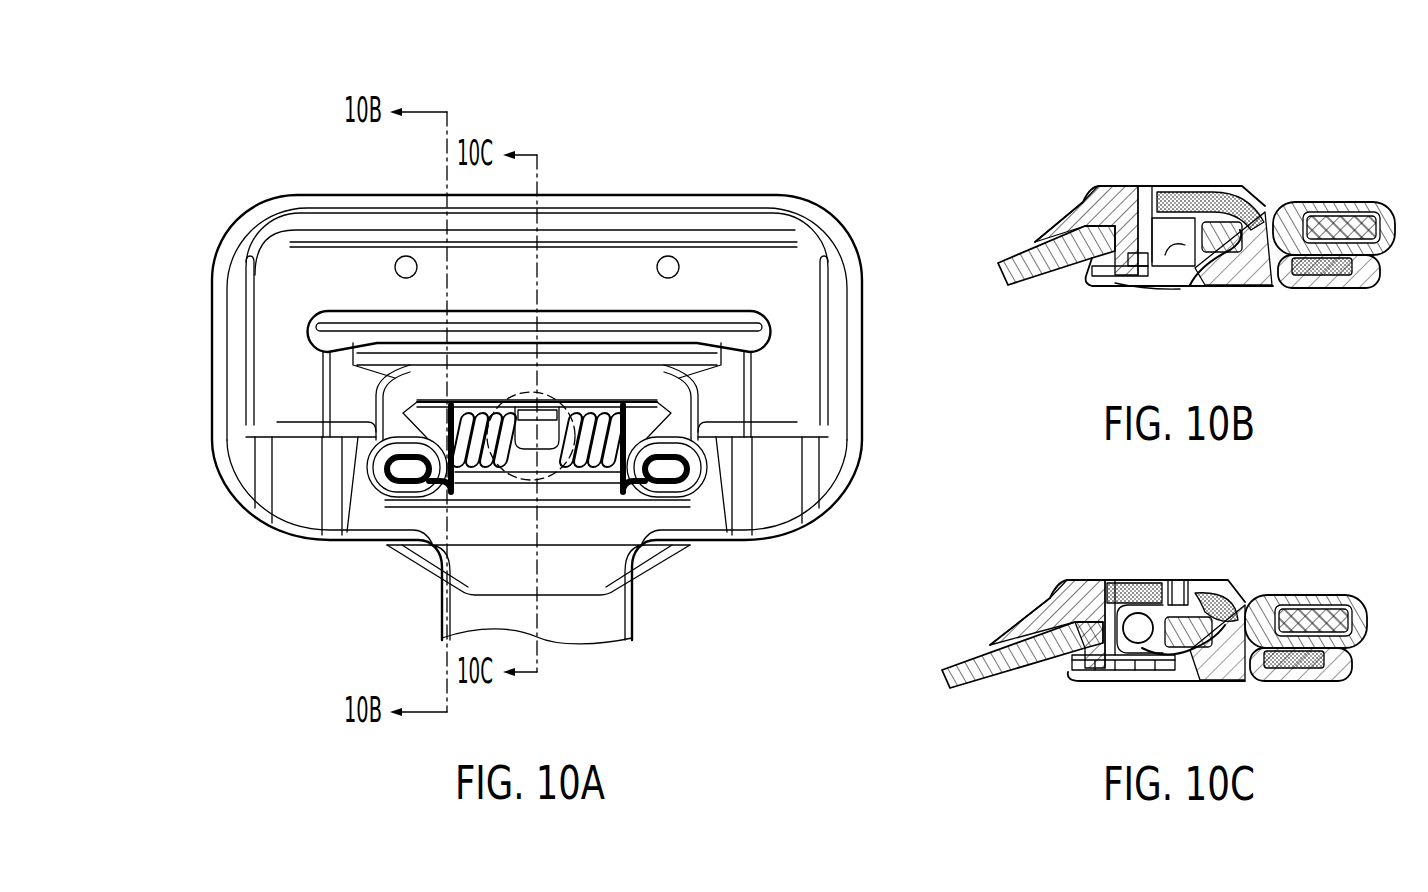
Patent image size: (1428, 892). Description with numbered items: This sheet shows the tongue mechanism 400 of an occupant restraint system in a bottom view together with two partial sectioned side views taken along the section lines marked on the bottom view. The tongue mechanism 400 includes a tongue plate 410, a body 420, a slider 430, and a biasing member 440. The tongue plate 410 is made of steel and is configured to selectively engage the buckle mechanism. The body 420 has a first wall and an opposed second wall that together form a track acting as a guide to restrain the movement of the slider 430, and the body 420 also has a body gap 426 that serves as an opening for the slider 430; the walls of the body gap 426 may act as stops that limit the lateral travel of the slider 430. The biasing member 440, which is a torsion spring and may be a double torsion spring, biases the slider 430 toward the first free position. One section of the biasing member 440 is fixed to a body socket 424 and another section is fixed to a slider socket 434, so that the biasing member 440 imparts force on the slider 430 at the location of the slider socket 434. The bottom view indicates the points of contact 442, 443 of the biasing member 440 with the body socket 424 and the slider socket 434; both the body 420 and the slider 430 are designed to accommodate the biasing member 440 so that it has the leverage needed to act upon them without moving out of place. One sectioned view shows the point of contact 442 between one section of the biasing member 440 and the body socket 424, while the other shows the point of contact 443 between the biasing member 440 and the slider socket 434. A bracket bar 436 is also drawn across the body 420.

In FIG. 10A, the tongue mechanism 400 is at (207, 143).
In FIG. 10A, the tongue plate 410 is at (608, 622).
In FIG. 10A, the body 420 is at (788, 494).
In FIG. 10B, the body 420 is at (1100, 212).
In FIG. 10C, the body 420 is at (1075, 600).
In FIG. 10A, the body socket 424 is at (627, 517).
In FIG. 10B, the body socket 424 is at (1142, 275).
In FIG. 10A, the body gap 426 is at (273, 212).
In FIG. 10A, the slider 430 is at (279, 299).
In FIG. 10B, the slider 430 is at (1243, 182).
In FIG. 10C, the slider 430 is at (1221, 576).
In FIG. 10A, the slider socket 434 is at (526, 436).
In FIG. 10C, the slider socket 434 is at (1174, 567).
In FIG. 10A, the bracket bar 436 is at (734, 311).
In FIG. 10A, the biasing member 440 is at (399, 459).
In FIG. 10B, the biasing member 440 is at (1195, 275).
In FIG. 10C, the biasing member 440 is at (1142, 638).
In FIG. 10A, the point of contact 442 is at (404, 513).
In FIG. 10B, the point of contact 442 is at (1176, 287).
In FIG. 10A, the point of contact 443 is at (554, 385).
In FIG. 10C, the point of contact 443 is at (1134, 567).